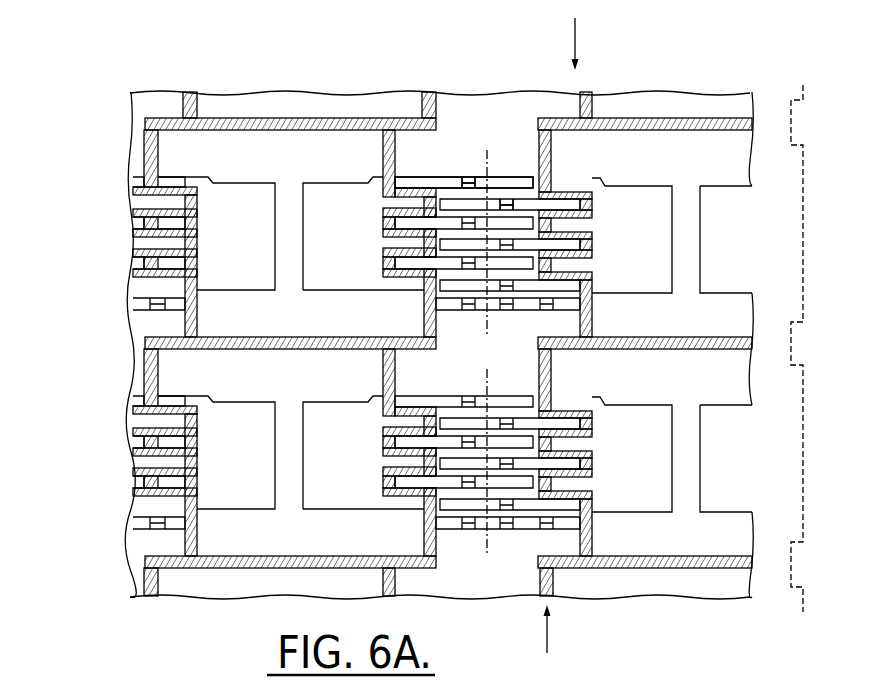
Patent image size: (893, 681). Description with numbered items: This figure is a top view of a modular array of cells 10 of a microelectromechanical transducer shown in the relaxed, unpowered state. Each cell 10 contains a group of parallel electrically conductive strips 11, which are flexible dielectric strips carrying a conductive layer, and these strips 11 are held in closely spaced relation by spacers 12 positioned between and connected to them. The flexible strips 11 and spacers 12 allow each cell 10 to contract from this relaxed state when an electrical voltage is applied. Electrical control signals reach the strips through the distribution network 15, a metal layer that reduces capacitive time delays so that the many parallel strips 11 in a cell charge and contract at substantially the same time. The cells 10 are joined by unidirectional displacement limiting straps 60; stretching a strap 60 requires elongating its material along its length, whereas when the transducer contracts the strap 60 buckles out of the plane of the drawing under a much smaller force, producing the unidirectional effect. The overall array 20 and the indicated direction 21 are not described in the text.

The cell 10 is at (487, 303).
The electrically conductive strip 11 is at (452, 208).
The spacer 12 is at (505, 200).
The distribution network 15 is at (271, 120).
The transducer array 20 is at (446, 334).
The direction of motion 21 is at (575, 37).
The unidirectional displacement limiting strap 60 is at (715, 255).